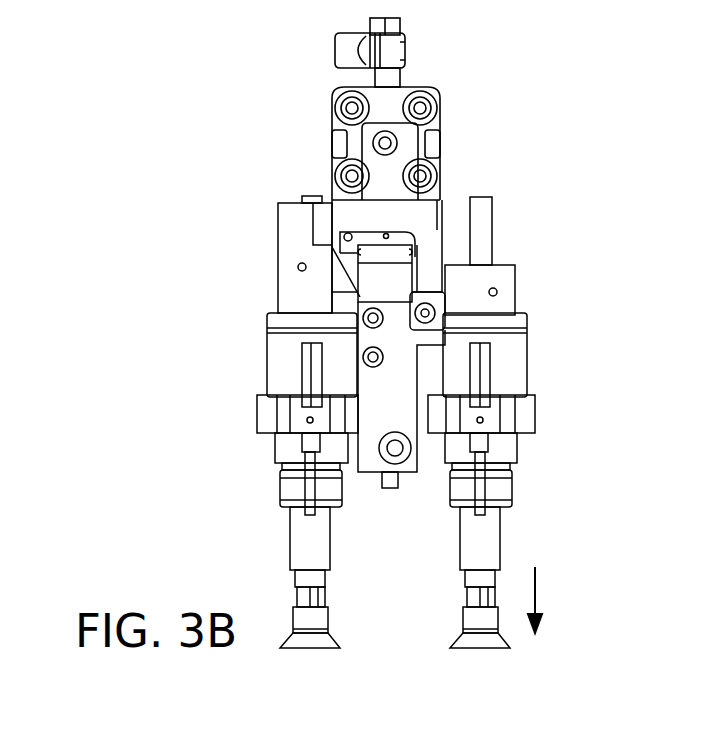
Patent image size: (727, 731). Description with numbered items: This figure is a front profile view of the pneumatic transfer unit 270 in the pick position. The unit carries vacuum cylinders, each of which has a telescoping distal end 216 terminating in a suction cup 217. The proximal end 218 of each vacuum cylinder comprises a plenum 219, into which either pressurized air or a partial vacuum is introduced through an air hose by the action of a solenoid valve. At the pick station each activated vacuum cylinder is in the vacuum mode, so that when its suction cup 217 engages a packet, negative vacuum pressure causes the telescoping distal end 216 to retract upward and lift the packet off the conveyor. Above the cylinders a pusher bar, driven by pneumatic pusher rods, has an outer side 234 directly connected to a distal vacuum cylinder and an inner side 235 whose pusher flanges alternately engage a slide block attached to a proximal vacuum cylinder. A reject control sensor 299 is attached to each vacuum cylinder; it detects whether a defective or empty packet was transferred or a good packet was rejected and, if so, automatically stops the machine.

The pneumatic transfer unit 270 is at (276, 82).
The outer side 234 is at (243, 240).
The inner side 235 is at (548, 278).
The reject control sensor 299 is at (300, 363).
The plenum 219 is at (508, 378).
The proximal end 218 is at (496, 539).
The telescoping distal end 216 is at (463, 595).
The suction cup 217 is at (480, 651).